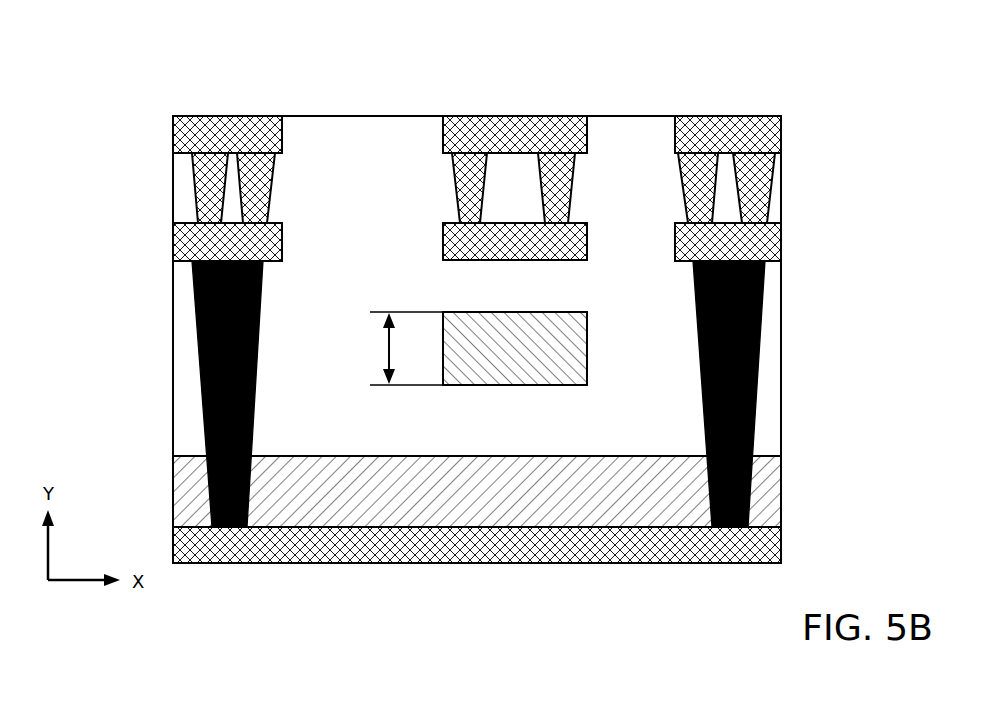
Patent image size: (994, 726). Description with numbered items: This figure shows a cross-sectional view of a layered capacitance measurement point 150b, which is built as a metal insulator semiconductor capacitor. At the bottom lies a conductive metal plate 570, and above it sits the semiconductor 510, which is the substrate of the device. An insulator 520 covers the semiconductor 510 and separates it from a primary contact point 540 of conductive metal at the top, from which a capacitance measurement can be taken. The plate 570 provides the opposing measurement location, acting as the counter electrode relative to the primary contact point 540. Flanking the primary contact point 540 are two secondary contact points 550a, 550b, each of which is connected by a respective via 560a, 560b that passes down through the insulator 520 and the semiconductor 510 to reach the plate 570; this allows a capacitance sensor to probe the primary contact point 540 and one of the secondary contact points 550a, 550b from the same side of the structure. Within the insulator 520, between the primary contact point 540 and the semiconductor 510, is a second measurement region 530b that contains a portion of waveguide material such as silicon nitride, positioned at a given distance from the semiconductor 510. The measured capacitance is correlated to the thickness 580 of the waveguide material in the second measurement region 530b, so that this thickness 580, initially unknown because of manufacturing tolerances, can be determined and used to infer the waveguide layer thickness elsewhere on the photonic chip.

The layered capacitance measurement point 150b is at (88, 373).
The semiconductor 510 is at (782, 490).
The insulator 520 is at (388, 135).
The second measurement region 530b is at (587, 355).
The primary contact point 540 is at (523, 117).
The secondary contact point 550a is at (173, 140).
The secondary contact point 550b is at (782, 133).
The via 560a is at (200, 305).
The via 560b is at (758, 328).
The plate 570 is at (782, 545).
The thickness 580 is at (387, 355).